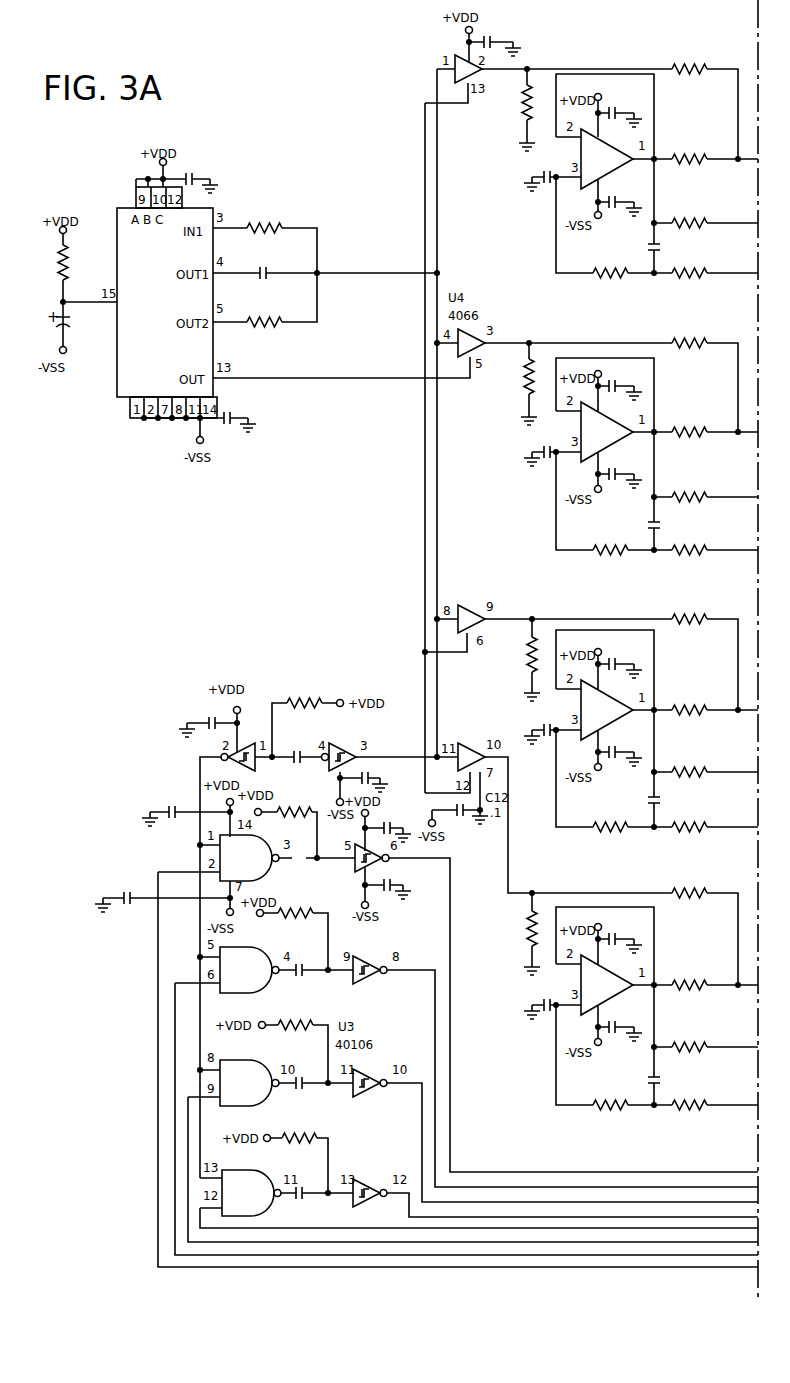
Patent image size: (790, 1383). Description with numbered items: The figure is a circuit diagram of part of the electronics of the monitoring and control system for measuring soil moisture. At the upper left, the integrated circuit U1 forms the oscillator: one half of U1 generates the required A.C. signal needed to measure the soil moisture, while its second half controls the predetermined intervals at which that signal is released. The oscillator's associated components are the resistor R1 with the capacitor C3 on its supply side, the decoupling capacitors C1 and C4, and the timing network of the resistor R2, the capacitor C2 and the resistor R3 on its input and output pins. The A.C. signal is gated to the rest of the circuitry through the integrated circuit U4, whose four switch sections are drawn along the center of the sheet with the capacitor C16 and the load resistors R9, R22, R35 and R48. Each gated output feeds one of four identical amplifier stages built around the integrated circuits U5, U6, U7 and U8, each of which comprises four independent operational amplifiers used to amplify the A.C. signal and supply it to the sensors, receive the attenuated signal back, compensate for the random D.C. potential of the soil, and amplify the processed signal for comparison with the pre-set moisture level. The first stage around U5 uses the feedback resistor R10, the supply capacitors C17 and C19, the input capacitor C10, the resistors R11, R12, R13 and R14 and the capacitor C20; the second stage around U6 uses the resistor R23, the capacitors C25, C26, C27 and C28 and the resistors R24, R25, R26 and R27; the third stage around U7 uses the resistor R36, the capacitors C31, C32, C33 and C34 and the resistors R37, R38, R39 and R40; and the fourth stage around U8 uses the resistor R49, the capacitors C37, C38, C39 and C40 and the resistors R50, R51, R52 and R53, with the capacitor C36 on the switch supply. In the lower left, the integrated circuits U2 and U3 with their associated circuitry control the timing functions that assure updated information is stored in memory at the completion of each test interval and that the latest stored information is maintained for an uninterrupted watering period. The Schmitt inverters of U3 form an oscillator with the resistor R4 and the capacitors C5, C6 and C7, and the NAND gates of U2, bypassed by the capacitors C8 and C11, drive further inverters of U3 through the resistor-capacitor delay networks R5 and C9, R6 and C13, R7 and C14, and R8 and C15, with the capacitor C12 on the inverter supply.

The integrated circuit U1 is at (167, 302).
The resistor 100K R1 is at (82, 263).
The capacitor 100K C3 is at (82, 334).
The capacitor .1 C1 is at (199, 165).
The capacitor .1 C4 is at (233, 404).
The resistor 120K R2 is at (264, 211).
The capacitor .01 C2 is at (265, 256).
The resistor 5K R3 is at (264, 305).
The integrated circuit U4 is at (470, 413).
The capacitor .1 C16 is at (501, 29).
The resistor 100K R9 is at (509, 105).
The resistor 200K R10 is at (689, 50).
The integrated circuit U5 is at (607, 159).
The capacitor .1 C17 is at (624, 98).
The capacitor .1 C10 is at (529, 176).
The capacitor .1 C19 is at (622, 186).
The resistor 100K R11 is at (690, 140).
The resistor 2K R12 is at (689, 204).
The resistor 100K R13 is at (609, 257).
The resistor 100K R14 is at (690, 256).
The capacitor .1 C20 is at (655, 275).
The resistor 100K R22 is at (512, 380).
The resistor 200K R23 is at (689, 324).
The integrated circuit U6 is at (607, 432).
The capacitor .1 C25 is at (625, 373).
The capacitor .1 C26 is at (531, 444).
The capacitor .1 C27 is at (622, 459).
The resistor 100K R24 is at (690, 413).
The resistor 2K R25 is at (689, 478).
The resistor 100K R26 is at (612, 534).
The resistor 100K R27 is at (691, 533).
The capacitor .1 C28 is at (658, 552).
The resistor 100K R35 is at (513, 657).
The resistor 200K R36 is at (692, 601).
The integrated circuit U7 is at (607, 710).
The capacitor .1 C31 is at (625, 651).
The capacitor .1 C32 is at (534, 722).
The capacitor .1 C33 is at (629, 738).
The resistor 100K R37 is at (691, 692).
The resistor 2K R38 is at (690, 754).
The resistor 100K R39 is at (609, 811).
The resistor 100K R40 is at (693, 810).
The capacitor .1 C34 is at (658, 828).
The resistor 100K R48 is at (513, 928).
The resistor 200K R49 is at (691, 876).
The integrated circuit U8 is at (607, 985).
The capacitor .1 C37 is at (628, 926).
The capacitor .1 C38 is at (534, 998).
The capacitor .1 C39 is at (629, 1011).
The resistor 100K R50 is at (691, 967).
The resistor 2K R51 is at (689, 1029).
The resistor 100K R52 is at (609, 1089).
The resistor 100K R53 is at (691, 1088).
The capacitor .1 C40 is at (658, 1111).
The capacitor .1 C36 is at (461, 827).
The integrated circuit U3 is at (305, 975).
The resistor 100K R4 is at (303, 684).
The capacitor .1 C5 is at (199, 705).
The capacitor .1 C6 is at (296, 739).
The capacitor .1 C7 is at (381, 774).
The capacitor .1 C8 is at (161, 798).
The resistor 100K R5 is at (293, 793).
The integrated circuit U2 is at (247, 1025).
The capacitor .1 C11 is at (115, 885).
The capacitor .1 C9 is at (399, 825).
The capacitor .1 C12 is at (408, 878).
The resistor 100K R6 is at (297, 896).
The capacitor .1 C13 is at (303, 956).
The resistor 100K R7 is at (297, 1008).
The capacitor .1 C14 is at (303, 1068).
The resistor 100K R8 is at (299, 1121).
The capacitor .1 C15 is at (303, 1174).